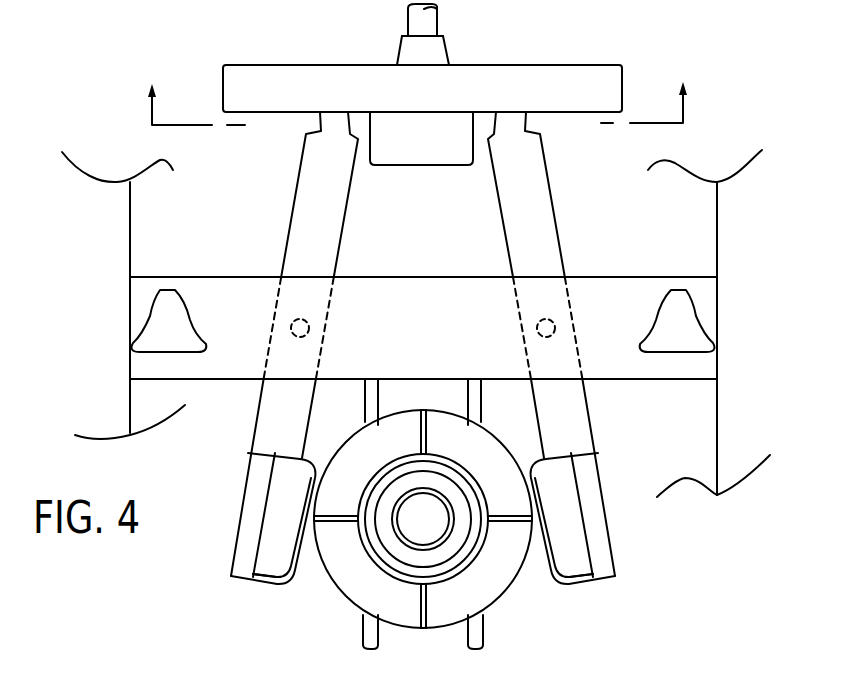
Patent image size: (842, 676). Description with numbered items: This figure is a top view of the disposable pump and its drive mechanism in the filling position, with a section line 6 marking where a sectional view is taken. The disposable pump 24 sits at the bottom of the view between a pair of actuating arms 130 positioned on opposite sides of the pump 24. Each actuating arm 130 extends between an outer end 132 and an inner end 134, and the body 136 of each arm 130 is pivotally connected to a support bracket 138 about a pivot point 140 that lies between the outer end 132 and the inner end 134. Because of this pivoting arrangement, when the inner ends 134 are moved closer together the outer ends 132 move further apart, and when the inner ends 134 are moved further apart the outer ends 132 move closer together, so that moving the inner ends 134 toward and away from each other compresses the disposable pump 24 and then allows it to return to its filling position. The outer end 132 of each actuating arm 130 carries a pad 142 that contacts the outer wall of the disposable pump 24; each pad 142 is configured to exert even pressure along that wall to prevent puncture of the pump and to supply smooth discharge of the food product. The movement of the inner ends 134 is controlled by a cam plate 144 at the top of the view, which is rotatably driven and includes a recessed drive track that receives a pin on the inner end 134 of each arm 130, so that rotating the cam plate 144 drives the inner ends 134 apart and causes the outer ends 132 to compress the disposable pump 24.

The section line 6- 6 is at (417, 89).
The disposable pump 24 is at (503, 582).
The actuating arms 130 is at (580, 255).
The outer end 132 is at (238, 524).
The inner end 134 is at (313, 207).
The body 136 is at (515, 208).
The support bracket 138 is at (700, 290).
The pivot point 140 is at (310, 327).
The pad 142 is at (307, 568).
The cam plate 144 is at (490, 85).